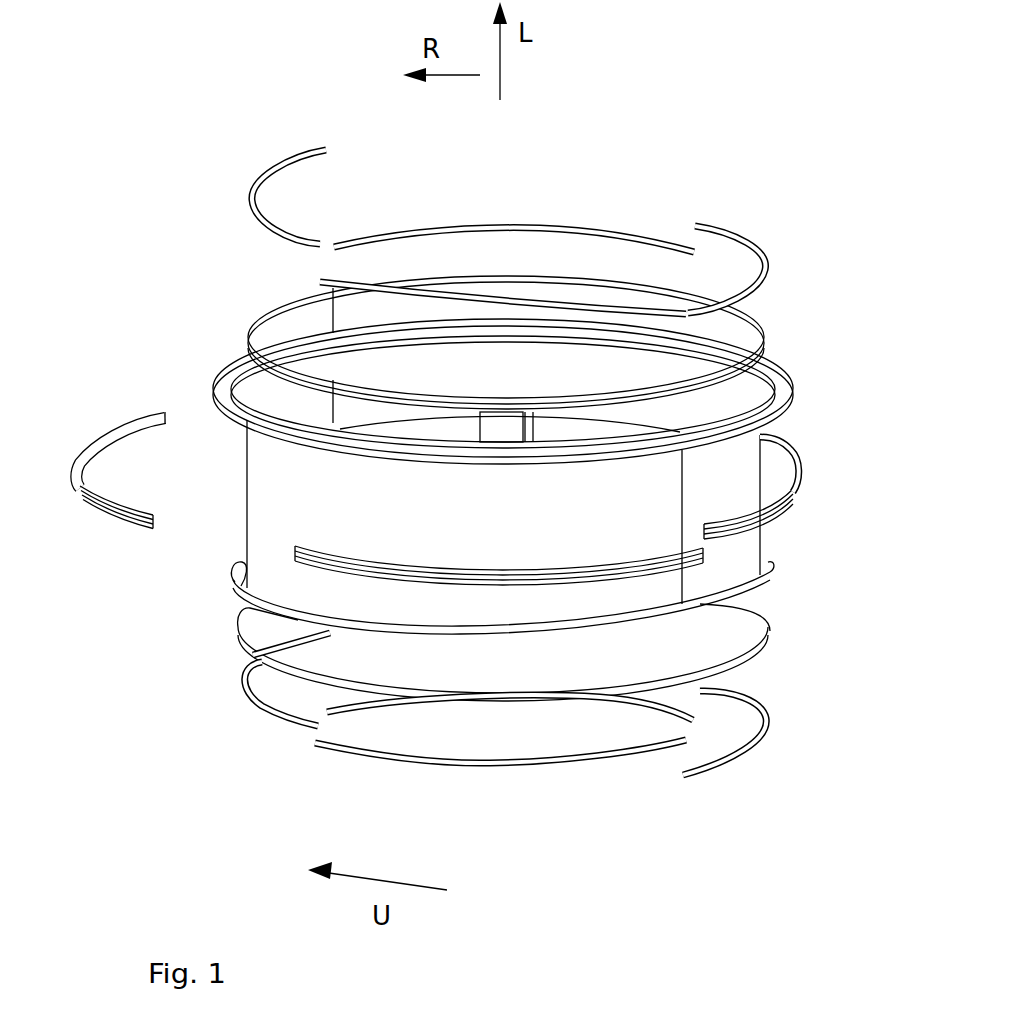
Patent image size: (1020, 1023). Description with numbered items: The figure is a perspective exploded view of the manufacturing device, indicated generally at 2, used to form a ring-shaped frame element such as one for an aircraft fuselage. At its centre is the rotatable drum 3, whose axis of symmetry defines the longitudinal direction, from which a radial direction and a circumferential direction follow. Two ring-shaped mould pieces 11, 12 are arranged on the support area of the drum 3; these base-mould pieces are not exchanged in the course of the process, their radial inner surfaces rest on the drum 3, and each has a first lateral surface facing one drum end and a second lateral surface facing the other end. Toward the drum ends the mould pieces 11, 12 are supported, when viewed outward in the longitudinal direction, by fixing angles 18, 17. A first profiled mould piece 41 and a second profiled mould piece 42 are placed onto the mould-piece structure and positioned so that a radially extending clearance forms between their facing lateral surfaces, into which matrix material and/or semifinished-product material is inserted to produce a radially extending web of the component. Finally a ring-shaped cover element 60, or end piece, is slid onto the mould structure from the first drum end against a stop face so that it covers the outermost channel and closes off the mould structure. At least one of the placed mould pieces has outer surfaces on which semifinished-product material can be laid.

The drum assembly 2 is at (240, 373).
The drum 3 is at (273, 475).
The ring-shaped mould piece 11 is at (313, 673).
The ring-shaped mould piece 12 is at (275, 309).
The fixing angle 17 is at (298, 722).
The fixing angle 18 is at (322, 150).
The first profiled mould piece 41 is at (243, 588).
The second profiled mould piece 42 is at (225, 386).
The ring-shaped cover element 60 is at (83, 488).